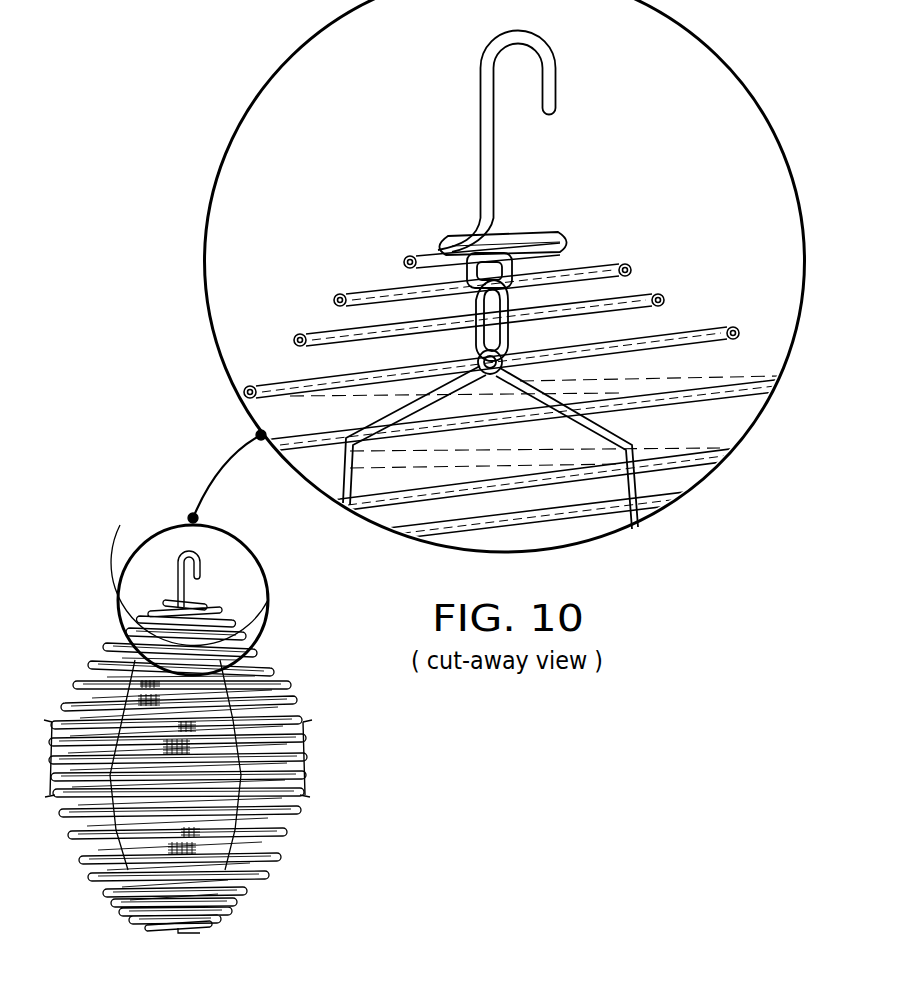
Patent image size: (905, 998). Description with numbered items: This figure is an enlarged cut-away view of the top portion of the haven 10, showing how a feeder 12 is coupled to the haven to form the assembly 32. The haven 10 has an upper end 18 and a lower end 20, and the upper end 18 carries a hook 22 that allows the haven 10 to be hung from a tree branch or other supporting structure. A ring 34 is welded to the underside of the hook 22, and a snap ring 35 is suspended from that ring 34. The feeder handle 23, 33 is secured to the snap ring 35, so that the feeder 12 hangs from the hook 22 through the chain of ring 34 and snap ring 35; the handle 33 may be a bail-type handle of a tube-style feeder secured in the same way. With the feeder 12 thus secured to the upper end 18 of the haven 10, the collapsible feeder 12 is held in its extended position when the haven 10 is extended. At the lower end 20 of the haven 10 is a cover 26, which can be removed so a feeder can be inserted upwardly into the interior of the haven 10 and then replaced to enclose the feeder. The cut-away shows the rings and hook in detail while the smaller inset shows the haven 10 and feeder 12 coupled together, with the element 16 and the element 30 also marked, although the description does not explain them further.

The haven 10 is at (182, 784).
The feeder 12 is at (292, 698).
The inner seed container 16 is at (262, 662).
The upper end 18 is at (566, 236).
The lower end 20 is at (139, 925).
The hook 22 is at (548, 84).
The feeder handle 23 is at (355, 426).
The cover 26 is at (188, 928).
The perch rod 30 is at (54, 754).
The assembly 32 is at (298, 607).
The handle 33 is at (350, 420).
The ring 34 is at (476, 262).
The snap ring 35 is at (476, 344).